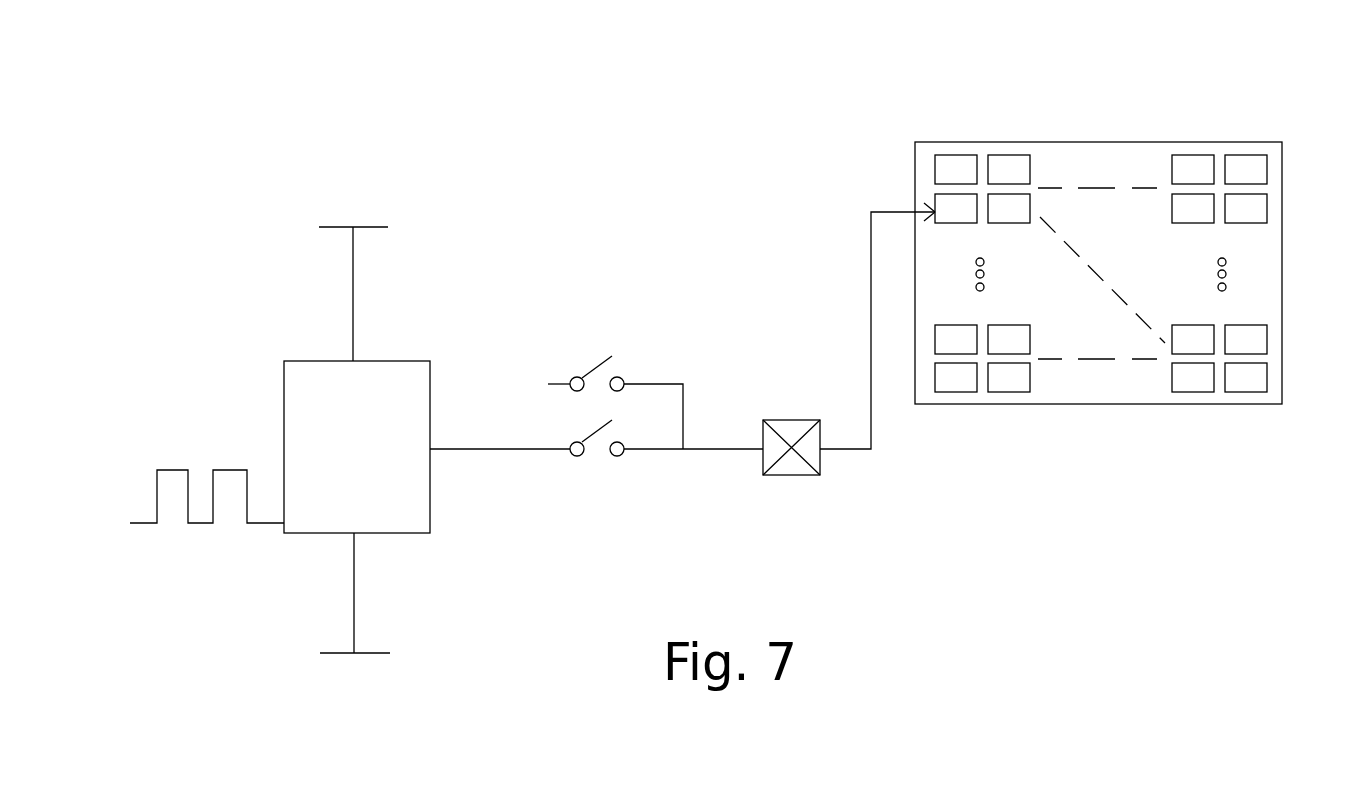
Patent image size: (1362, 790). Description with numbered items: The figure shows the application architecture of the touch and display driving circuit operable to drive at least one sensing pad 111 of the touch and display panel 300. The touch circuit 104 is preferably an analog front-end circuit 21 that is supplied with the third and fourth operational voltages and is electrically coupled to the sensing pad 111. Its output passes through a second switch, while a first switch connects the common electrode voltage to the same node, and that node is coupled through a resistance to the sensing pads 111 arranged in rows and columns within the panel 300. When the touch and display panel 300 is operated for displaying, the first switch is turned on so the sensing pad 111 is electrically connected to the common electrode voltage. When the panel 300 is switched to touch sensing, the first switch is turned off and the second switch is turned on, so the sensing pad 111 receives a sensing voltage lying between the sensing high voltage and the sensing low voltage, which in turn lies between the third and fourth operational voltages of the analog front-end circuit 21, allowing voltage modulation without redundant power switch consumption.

The touch circuit 104 is at (427, 175).
The analog front-end circuit 21 is at (382, 477).
The sensing pad 111 is at (1011, 168).
The touch and display panel 300 is at (1282, 142).